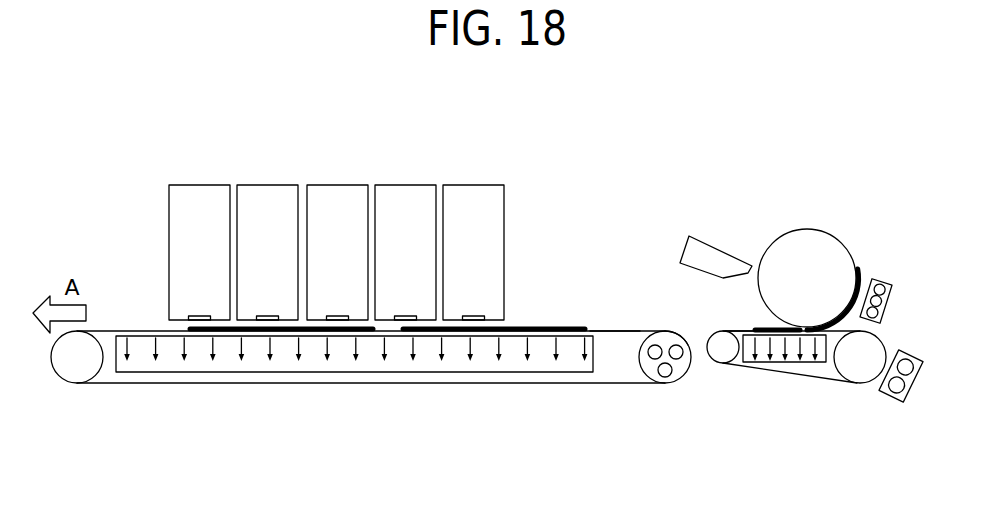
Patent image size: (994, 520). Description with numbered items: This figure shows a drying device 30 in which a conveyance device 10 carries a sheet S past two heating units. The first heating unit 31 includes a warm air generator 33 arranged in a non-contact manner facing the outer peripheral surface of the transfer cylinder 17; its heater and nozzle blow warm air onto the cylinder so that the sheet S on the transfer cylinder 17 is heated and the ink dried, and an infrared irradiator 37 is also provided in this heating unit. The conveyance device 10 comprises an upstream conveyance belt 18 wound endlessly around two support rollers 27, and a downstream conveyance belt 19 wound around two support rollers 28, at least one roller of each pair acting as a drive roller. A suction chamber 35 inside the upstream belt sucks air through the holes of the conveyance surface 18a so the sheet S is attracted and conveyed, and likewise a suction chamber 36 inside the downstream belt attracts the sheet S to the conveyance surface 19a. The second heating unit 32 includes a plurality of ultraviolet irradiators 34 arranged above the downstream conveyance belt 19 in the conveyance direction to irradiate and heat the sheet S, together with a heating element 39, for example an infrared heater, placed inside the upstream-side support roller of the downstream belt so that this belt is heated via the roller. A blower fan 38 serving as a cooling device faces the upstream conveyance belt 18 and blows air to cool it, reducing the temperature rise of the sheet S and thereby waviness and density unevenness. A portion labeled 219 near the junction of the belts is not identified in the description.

The conveyance device 10 is at (706, 429).
The transfer cylinder 17 is at (818, 242).
The upstream conveyance belt 18 is at (815, 384).
The conveyance surface 18a is at (743, 332).
The downstream conveyance belt 19 is at (512, 385).
The conveyance surface 19a is at (613, 330).
The belt curved portion 219 is at (688, 332).
The support rollers 27 is at (722, 352).
The support rollers 28 is at (70, 372).
The drying device 30 is at (607, 142).
The first heating unit 31 is at (691, 216).
The second heating unit 32 is at (303, 154).
The warm air generator 33 is at (718, 252).
The ultraviolet irradiators 34 is at (200, 185).
The suction chamber 35 is at (776, 362).
The suction chamber 36 is at (315, 375).
The infrared irradiator 37 is at (887, 306).
The blower fan 38 is at (915, 387).
The heating element 39 is at (671, 371).
The sheet S is at (546, 326).